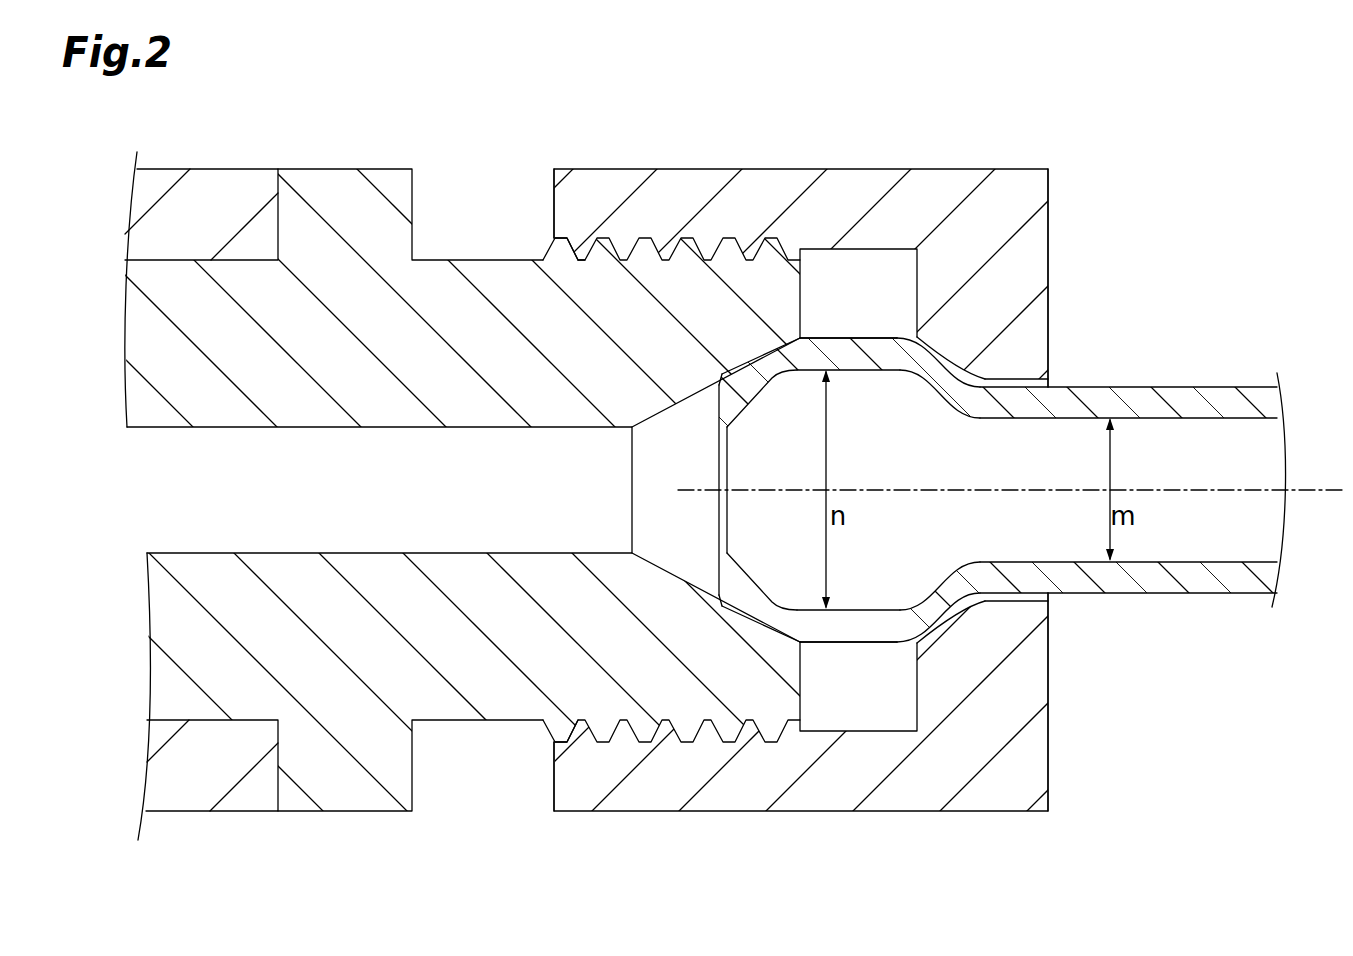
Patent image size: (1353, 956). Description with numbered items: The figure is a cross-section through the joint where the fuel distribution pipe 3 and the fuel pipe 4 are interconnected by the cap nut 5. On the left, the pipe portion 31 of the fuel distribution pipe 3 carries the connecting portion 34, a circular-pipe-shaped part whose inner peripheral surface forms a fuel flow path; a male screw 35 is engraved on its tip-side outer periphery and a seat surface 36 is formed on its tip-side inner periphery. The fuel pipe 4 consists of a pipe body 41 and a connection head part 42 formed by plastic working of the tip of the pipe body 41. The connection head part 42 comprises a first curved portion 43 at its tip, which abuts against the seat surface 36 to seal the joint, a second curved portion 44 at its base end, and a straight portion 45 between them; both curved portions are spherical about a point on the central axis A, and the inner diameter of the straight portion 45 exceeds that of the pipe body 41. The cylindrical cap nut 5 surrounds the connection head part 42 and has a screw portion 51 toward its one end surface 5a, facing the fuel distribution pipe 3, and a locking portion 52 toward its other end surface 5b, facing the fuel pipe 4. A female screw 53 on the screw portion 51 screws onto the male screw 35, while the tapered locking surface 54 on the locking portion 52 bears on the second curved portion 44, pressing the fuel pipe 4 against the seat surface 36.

The fuel distribution pipe 3 is at (165, 165).
The pipe portion 31 is at (231, 168).
The connecting portion 34 is at (331, 168).
The male screw 35 is at (647, 236).
The seat surface 36 is at (660, 414).
The fuel pipe 4 is at (1240, 383).
The pipe body 41 is at (1212, 386).
The connection head part 42 is at (885, 337).
The first curved portion 43 is at (738, 405).
The second curved portion 44 is at (952, 380).
The straight portion 45 is at (850, 355).
The cap nut 5 is at (841, 165).
The one end surface 5a is at (553, 197).
The other end surface 5b is at (1051, 215).
The screw portion 51 is at (687, 168).
The locking portion 52 is at (1008, 168).
The female screw 53 is at (580, 260).
The locking surface 54 is at (995, 380).
The central axis A is at (1316, 488).